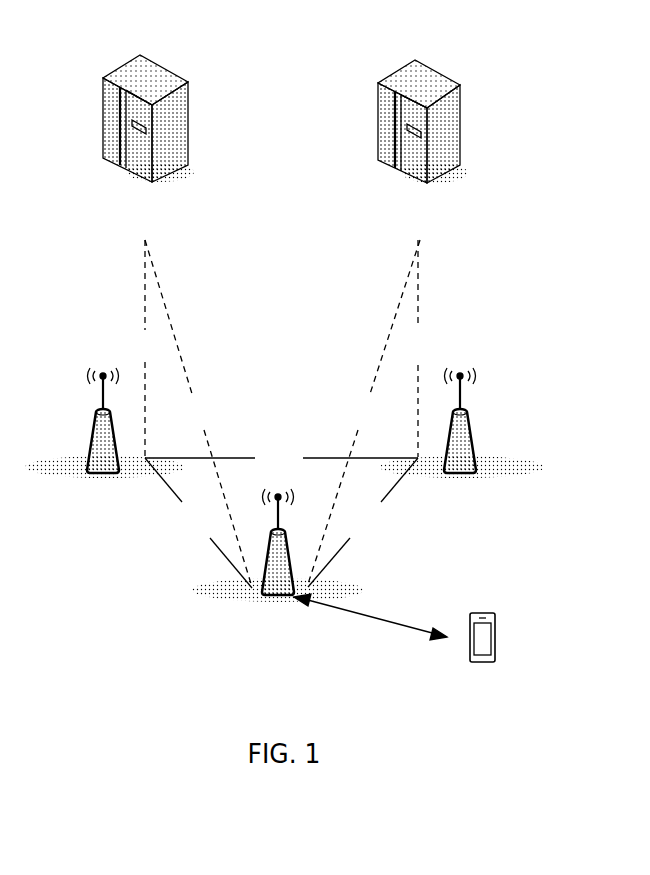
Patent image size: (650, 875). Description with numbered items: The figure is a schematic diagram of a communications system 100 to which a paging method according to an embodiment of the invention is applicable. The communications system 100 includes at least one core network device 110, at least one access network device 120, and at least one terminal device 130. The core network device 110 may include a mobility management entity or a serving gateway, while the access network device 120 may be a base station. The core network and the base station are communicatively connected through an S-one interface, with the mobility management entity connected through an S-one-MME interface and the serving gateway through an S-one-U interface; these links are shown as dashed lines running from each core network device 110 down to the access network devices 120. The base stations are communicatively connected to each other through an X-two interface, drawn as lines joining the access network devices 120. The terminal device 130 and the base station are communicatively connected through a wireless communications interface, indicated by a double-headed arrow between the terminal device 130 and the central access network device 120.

The communications system 100 is at (85, 32).
The core network device 110 is at (285, 143).
The access network device 120 is at (284, 505).
The terminal device 130 is at (482, 655).